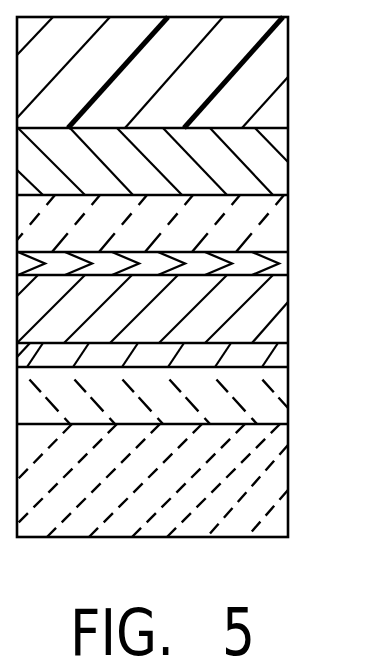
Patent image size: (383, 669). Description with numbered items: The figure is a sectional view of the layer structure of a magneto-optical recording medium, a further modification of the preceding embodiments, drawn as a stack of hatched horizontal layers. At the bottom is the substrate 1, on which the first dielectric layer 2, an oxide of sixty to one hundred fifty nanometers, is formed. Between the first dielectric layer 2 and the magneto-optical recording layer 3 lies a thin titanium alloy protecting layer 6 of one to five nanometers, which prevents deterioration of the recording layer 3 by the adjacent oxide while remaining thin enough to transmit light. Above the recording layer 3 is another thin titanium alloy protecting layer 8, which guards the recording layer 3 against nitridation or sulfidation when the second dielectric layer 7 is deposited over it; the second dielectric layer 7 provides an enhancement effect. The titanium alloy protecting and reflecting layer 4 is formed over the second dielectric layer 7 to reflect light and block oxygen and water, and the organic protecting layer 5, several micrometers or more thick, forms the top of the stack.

The substrate 1 is at (280, 477).
The first dielectric layer 2 is at (288, 388).
The magneto-optical recording layer 3 is at (275, 305).
The titanium alloy protecting and reflecting layer 4 is at (275, 155).
The organic protecting layer 5 is at (270, 57).
The thin titanium alloy protecting layer 6 is at (273, 357).
The second dielectric layer 7 is at (270, 228).
The thin titanium alloy protecting layer 8 is at (276, 262).